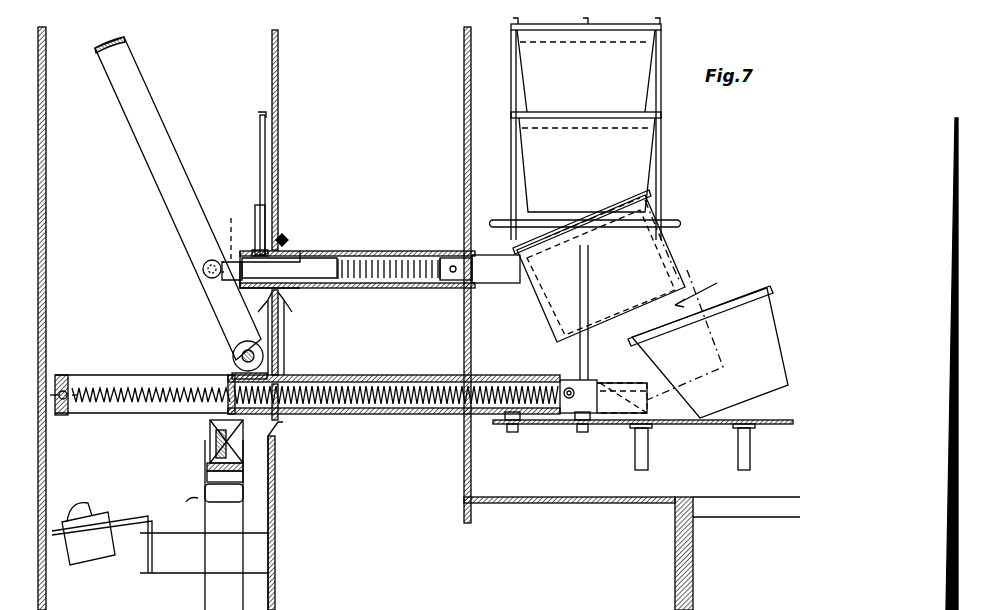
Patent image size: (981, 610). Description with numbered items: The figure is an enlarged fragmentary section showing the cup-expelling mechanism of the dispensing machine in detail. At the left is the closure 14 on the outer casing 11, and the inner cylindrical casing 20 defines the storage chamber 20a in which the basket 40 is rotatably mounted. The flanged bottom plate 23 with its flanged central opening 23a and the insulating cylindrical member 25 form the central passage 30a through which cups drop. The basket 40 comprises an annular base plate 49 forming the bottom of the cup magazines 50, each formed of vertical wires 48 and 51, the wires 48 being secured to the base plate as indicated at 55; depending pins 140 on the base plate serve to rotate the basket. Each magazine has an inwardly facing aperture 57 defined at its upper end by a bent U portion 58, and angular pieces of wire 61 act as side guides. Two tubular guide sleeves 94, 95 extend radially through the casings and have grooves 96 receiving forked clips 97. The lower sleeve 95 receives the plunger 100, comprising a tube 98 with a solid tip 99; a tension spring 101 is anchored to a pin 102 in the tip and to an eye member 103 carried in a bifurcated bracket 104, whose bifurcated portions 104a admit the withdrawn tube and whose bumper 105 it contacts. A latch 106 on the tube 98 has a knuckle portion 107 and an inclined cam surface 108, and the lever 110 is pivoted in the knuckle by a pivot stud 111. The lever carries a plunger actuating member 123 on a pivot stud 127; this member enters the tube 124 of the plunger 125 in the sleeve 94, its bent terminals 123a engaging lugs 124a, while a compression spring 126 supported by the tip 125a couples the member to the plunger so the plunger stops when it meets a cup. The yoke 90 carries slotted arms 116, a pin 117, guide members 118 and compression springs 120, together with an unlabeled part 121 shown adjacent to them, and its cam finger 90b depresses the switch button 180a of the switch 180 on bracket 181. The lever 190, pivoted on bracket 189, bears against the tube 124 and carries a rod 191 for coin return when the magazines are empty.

The closure 14 is at (46, 124).
The outer casing 11 is at (272, 48).
The inner cylindrical casing 20 is at (464, 42).
The flanged bottom plate 23 is at (612, 506).
The cylindrical member 25 is at (675, 600).
The flanged central opening 23a is at (698, 508).
The central passage 30a is at (752, 554).
The chamber 20a is at (562, 474).
The solid tip 99 is at (650, 424).
The pins 140 is at (635, 462).
The lower tubular guide sleeve 95 is at (409, 374).
The plunger 100 is at (468, 418).
The tube 98 is at (400, 420).
The pin 102 is at (569, 413).
The vertical wires 48 is at (510, 190).
The annular base plate 49 is at (558, 426).
The wire securing point 55 is at (512, 432).
The tension spring 101 is at (172, 418).
The eye member 103 is at (70, 382).
The bracket 104 is at (117, 386).
The bumper 105 is at (66, 415).
The bifurcated portions 104a is at (120, 418).
The lever 110 is at (170, 240).
The pivot stud 127 is at (203, 270).
The plunger actuating member 123 is at (222, 279).
The bent terminals 123a is at (336, 290).
The compression spring 126 is at (385, 288).
The plunger 125 is at (389, 250).
The tip 125a is at (505, 270).
The upper tubular guide sleeve 94 is at (373, 250).
The tube 124 is at (319, 246).
The lugs 124a is at (229, 232).
The grooves 96 is at (284, 238).
The lever 190 is at (262, 232).
The bracket 189 is at (260, 190).
The rod 191 is at (259, 116).
The forked clips 97 is at (275, 332).
The knuckle portion 107 is at (233, 358).
The pivot stud 111 is at (238, 343).
The latch 106 is at (232, 372).
The yoke 90 is at (224, 525).
The bracket 181 is at (166, 574).
The switch 180 is at (85, 563).
The switch button 180a is at (90, 505).
The pin 117 is at (218, 444).
The slotted arms 116 is at (210, 454).
The compression springs 120 is at (206, 466).
The block 121 is at (250, 478).
The guide members 118 is at (243, 493).
The cam finger 90b is at (228, 497).
The inclined cam surface 108 is at (278, 444).
The basket 40 is at (662, 150).
The cup magazines 50 is at (682, 32).
The vertical wires 51 is at (662, 184).
The bent U portion 58 is at (676, 268).
The aperture 57 is at (720, 290).
The angular pieces of wire 61 is at (623, 366).